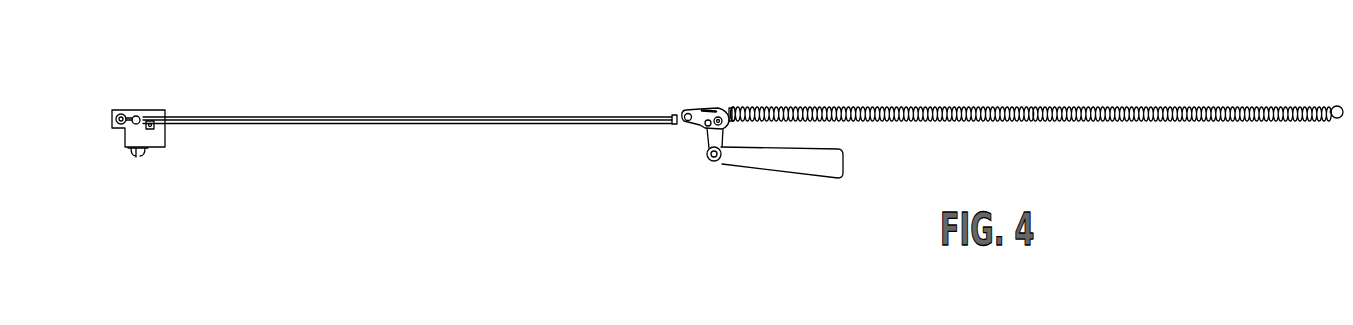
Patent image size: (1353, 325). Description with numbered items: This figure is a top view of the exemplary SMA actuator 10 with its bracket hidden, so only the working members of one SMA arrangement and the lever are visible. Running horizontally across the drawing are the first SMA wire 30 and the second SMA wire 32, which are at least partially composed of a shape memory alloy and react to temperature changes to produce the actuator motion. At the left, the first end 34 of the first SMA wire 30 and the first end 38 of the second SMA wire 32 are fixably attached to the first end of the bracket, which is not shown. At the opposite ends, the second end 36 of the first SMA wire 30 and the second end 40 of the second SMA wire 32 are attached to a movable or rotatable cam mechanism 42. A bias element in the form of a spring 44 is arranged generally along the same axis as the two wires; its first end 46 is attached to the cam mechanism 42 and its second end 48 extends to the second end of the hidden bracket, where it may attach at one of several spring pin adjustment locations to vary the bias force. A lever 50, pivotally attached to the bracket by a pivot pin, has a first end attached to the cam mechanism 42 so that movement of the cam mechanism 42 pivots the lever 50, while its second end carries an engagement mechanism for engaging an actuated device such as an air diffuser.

The SMA actuator 10 is at (1209, 46).
The first SMA wire 30 is at (627, 112).
The second SMA wire 32 is at (612, 127).
The first end of the first SMA wire 34 is at (137, 110).
The second end of the first SMA wire 36 is at (680, 113).
The first end of the second SMA wire 38 is at (167, 123).
The second end of the second SMA wire 40 is at (697, 131).
The cam mechanism 42 is at (708, 110).
The spring 44 is at (790, 107).
The first end of the spring 46 is at (745, 121).
The second end of the spring 48 is at (1332, 105).
The lever 50 is at (807, 163).